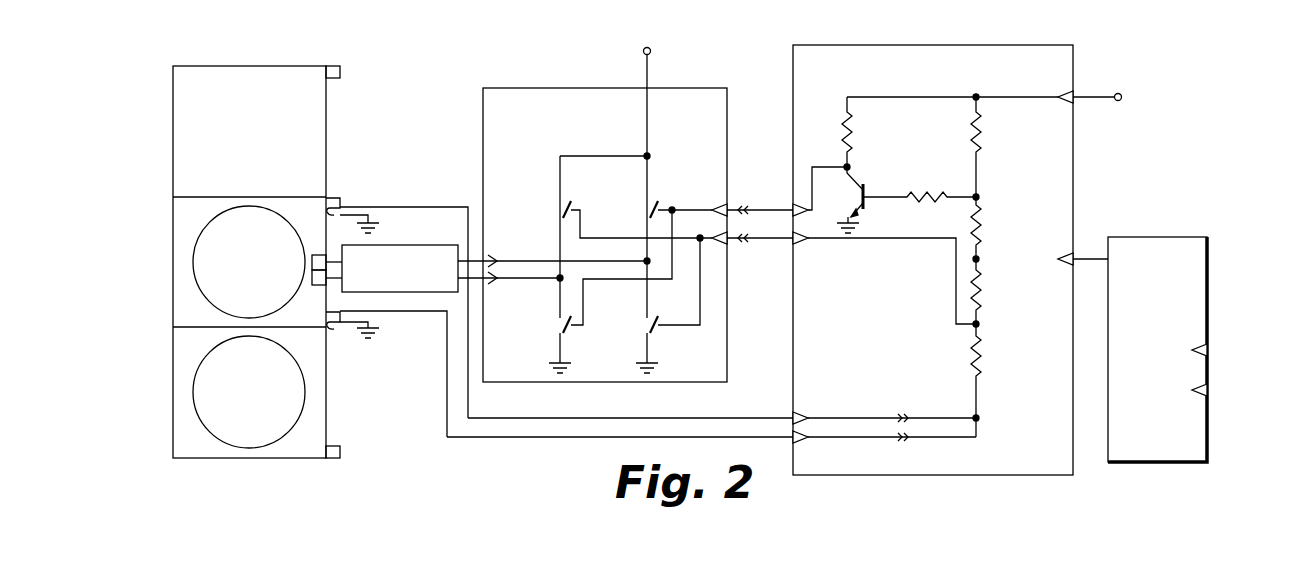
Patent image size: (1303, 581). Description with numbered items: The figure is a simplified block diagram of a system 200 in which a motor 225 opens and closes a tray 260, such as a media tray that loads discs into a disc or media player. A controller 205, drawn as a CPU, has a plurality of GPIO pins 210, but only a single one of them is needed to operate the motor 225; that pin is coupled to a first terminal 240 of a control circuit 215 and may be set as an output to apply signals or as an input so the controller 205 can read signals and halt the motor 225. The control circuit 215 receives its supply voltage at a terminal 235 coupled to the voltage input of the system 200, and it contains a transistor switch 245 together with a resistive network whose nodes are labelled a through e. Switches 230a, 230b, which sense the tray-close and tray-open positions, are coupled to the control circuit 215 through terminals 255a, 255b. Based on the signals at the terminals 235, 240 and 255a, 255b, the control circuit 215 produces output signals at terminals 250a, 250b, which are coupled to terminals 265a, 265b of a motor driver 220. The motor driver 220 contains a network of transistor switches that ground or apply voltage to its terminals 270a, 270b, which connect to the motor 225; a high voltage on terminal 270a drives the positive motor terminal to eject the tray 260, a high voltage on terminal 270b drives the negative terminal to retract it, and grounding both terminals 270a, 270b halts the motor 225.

The system 200 is at (1203, 142).
The controller 205 is at (1212, 242).
The GPIO pins 210 is at (1118, 250).
The control circuit 215 is at (972, 45).
The motor driver 220 is at (685, 88).
The motor 225 is at (388, 246).
The switch 230a is at (336, 200).
The switch 230b is at (335, 333).
The terminal 235 is at (1066, 94).
The first terminal 240 is at (1066, 257).
The transistor switch 245 is at (856, 186).
The terminal 250a is at (800, 205).
The terminal 250b is at (800, 244).
The terminal 255a is at (800, 415).
The terminal 255b is at (800, 440).
The tray 260 is at (157, 239).
The terminal 265a is at (738, 208).
The terminal 265b is at (737, 242).
The terminal 270a is at (496, 258).
The terminal 270b is at (496, 281).